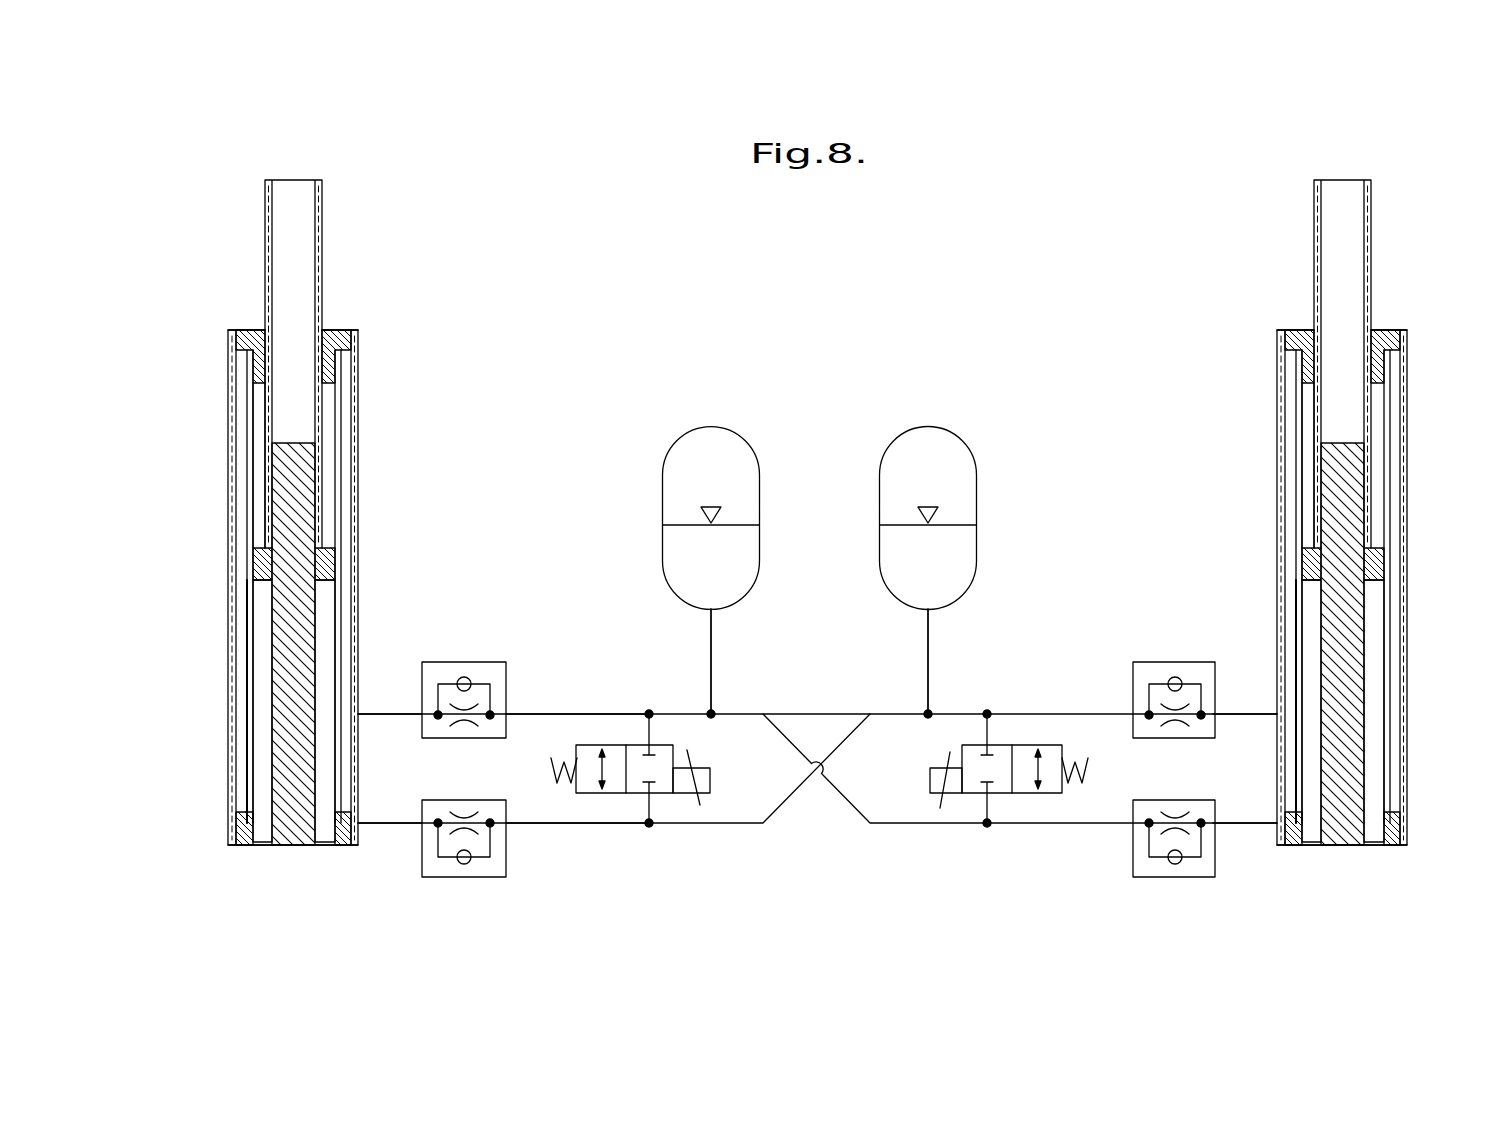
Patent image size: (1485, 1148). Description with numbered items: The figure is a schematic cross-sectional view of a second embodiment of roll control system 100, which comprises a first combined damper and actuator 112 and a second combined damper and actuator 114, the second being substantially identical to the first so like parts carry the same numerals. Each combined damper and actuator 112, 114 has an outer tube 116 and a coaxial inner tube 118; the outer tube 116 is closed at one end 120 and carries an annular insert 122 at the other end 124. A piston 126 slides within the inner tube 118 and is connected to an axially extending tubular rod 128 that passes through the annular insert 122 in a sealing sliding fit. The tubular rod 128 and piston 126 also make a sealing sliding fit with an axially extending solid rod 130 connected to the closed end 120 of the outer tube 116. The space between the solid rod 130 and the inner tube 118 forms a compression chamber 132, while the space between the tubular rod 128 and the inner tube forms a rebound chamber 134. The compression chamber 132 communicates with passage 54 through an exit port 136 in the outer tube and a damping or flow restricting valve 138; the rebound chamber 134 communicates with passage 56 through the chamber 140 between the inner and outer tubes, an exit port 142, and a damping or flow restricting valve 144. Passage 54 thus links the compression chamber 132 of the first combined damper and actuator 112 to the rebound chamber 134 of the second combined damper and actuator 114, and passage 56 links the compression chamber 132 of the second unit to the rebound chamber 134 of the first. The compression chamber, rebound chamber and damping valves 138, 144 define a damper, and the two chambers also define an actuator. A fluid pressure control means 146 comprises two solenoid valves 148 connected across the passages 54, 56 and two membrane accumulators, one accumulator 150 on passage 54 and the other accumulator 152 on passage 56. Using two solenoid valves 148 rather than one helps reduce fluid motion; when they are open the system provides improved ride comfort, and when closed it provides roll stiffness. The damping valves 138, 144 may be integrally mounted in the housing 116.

The passage 54 is at (592, 823).
The passage 56 is at (580, 714).
The roll control system 100 is at (560, 307).
The first combined damper and actuator 112 is at (367, 476).
The second combined damper and actuator 114 is at (1415, 475).
The outer tube 116 is at (359, 570).
The inner tube 118 is at (250, 612).
The closed end 120 is at (245, 845).
The annular insert 122 is at (330, 340).
The other end 124 is at (358, 330).
The piston 126 is at (262, 571).
The tubular rod 128 is at (323, 227).
The solid rod 130 is at (285, 736).
The compression chamber 132 is at (258, 676).
The rebound chamber 134 is at (262, 456).
The exit port 136 is at (365, 835).
The damping or flow restricting valve 138 is at (470, 877).
The chamber 140 is at (345, 635).
The exit port 142 is at (358, 715).
The damping or flow restricting valve 144 is at (488, 662).
The fluid pressure control means 146 is at (858, 440).
The solenoid valve 148 is at (668, 795).
The membrane accumulator 150 is at (977, 572).
The membrane accumulator 152 is at (760, 572).